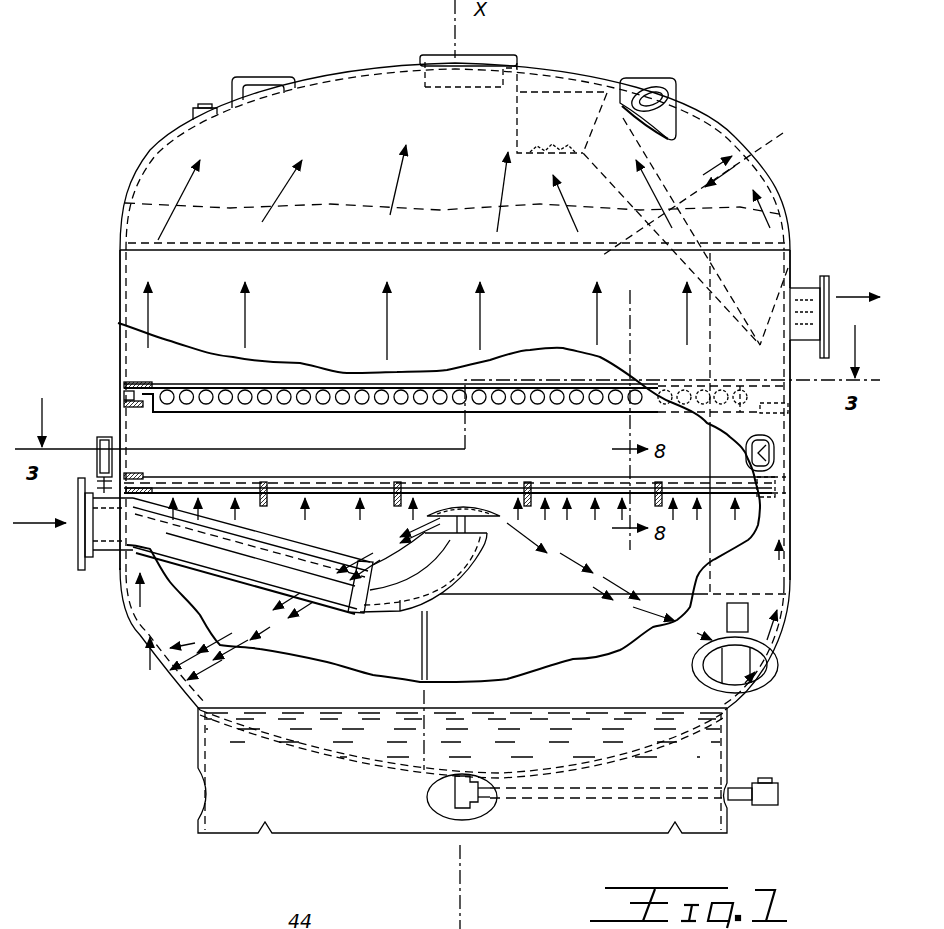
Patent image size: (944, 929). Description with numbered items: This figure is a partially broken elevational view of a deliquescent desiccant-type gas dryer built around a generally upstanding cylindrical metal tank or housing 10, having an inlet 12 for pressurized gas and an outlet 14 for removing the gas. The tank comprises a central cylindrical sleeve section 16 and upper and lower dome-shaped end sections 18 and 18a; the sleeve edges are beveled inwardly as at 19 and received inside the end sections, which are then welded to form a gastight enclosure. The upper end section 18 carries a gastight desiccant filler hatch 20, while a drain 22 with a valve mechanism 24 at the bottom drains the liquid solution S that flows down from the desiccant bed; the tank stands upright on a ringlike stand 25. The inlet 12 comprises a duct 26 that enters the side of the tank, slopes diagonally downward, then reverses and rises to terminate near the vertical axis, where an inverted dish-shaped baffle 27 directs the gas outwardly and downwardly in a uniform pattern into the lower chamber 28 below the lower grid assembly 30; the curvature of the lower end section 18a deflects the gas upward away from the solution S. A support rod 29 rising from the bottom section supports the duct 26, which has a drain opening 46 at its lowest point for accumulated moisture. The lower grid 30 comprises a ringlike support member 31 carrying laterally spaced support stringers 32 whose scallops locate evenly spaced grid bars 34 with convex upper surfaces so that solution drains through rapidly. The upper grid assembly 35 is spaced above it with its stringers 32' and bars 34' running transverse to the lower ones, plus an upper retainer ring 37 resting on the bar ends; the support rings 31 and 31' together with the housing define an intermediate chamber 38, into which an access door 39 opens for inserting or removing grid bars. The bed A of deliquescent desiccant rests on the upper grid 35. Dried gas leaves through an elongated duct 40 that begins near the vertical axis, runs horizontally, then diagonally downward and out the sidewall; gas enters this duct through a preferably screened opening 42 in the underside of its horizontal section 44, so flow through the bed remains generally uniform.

The tank or housing 10 is at (798, 200).
The inlet 12 is at (102, 565).
The outlet 14 is at (805, 287).
The central cylindrical sleeve section 16 is at (128, 300).
The upper dome-shaped end section 18 is at (337, 118).
The lower dome-shaped end section 18a is at (228, 687).
The beveled edges 19 is at (118, 247).
The desiccant filler hatch 20 is at (517, 57).
The drain 22 is at (478, 820).
The valve mechanism 24 is at (770, 803).
The ringlike stand 25 is at (730, 738).
The inlet duct 26 is at (339, 612).
The inverted dish-shaped baffle 27 is at (470, 512).
The lower chamber 28 is at (742, 530).
The support rod 29 is at (430, 633).
The lower grid assembly 30 is at (724, 470).
The ringlike support member 31 is at (485, 487).
The support ring of upper grid 31' is at (455, 410).
The support stringers 32 is at (483, 468).
The stringer members of upper grid 32' is at (451, 419).
The grid bars 34 is at (448, 466).
The grid bars of upper grid 34' is at (453, 361).
The upper grid assembly 35 is at (196, 377).
The upper retainer ring 37 is at (143, 382).
The intermediate chamber 38 is at (165, 427).
The access door 39 is at (777, 453).
The elongated outlet duct 40 is at (699, 230).
The outlet opening 42 is at (540, 152).
The horizontal section 44 is at (583, 78).
The drain opening 46 is at (395, 612).
The bed of deliquescent desiccant material A is at (320, 205).
The liquid solution S is at (318, 734).